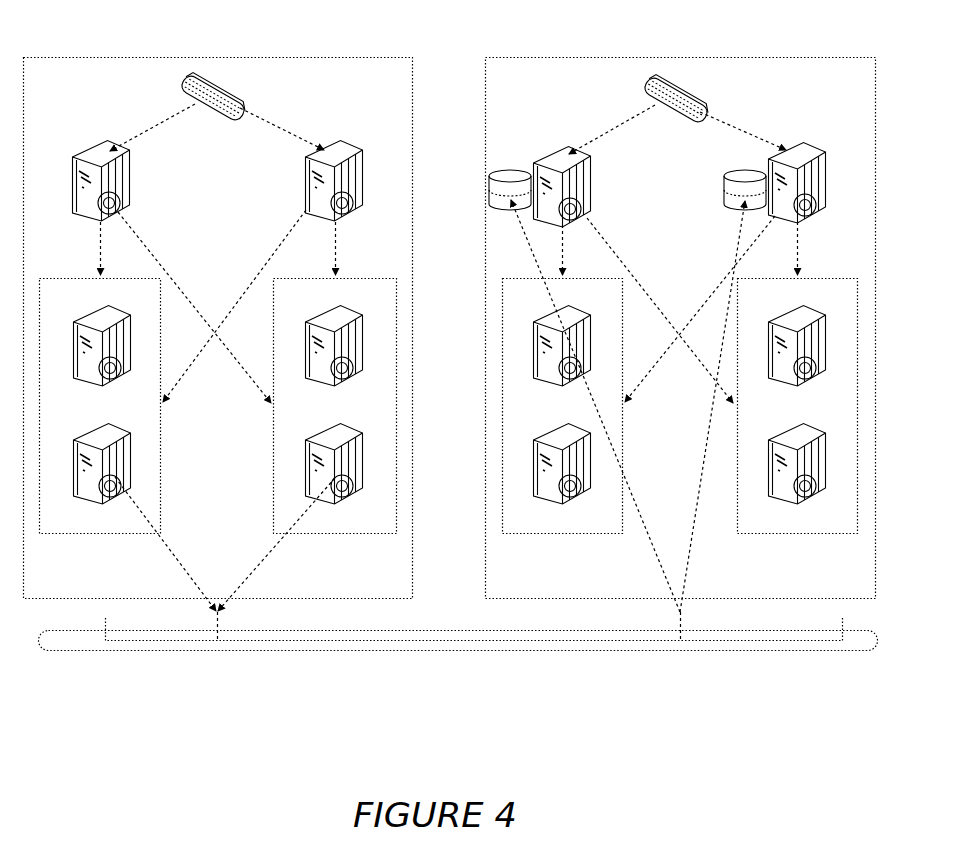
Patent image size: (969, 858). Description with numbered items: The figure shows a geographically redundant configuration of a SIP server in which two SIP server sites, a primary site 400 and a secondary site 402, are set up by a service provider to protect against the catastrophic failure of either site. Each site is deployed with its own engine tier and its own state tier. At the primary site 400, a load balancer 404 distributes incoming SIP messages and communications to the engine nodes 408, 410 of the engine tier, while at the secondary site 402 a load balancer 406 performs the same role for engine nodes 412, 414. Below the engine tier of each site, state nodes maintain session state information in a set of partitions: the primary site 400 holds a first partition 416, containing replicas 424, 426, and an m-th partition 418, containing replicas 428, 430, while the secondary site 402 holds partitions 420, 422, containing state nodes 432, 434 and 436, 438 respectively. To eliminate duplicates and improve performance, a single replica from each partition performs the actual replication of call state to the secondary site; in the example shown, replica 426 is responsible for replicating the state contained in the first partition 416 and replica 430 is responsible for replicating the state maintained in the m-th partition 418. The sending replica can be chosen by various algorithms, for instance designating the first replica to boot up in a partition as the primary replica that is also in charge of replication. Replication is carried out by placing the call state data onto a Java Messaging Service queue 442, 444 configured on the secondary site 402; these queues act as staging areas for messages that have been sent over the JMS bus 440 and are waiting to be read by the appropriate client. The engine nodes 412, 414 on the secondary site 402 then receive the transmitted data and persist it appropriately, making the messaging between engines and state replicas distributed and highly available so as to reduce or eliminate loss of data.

The primary site 400 is at (412, 57).
The secondary site 402 is at (515, 57).
The load balancer 404 is at (244, 96).
The load balancer 406 is at (697, 96).
The engine node 408 is at (79, 148).
The engine node 410 is at (350, 143).
The engine node 412 is at (559, 147).
The engine node 414 is at (801, 146).
The partition 1 416 is at (58, 277).
The partition m 418 is at (378, 278).
The partition 420 is at (516, 278).
The partition 422 is at (840, 278).
The state node 424 is at (73, 322).
The replica 426 is at (73, 440).
The state node 428 is at (305, 322).
The replica 430 is at (305, 440).
The state node 432 is at (533, 322).
The state node 434 is at (533, 440).
The state node 436 is at (768, 322).
The state node 438 is at (768, 440).
The JMS bus 440 is at (447, 652).
The JMS queue 442 is at (506, 170).
The JMS queue 444 is at (726, 172).